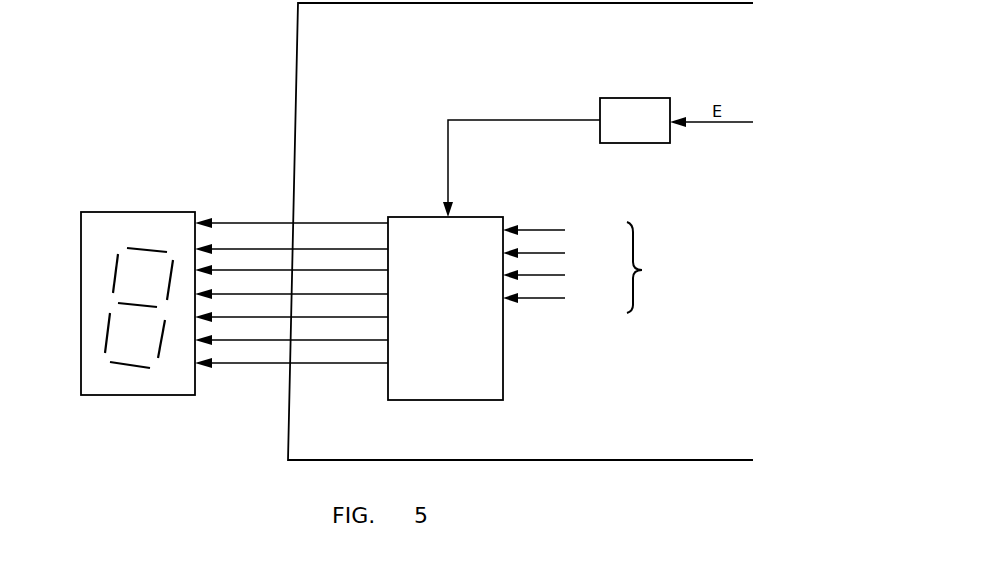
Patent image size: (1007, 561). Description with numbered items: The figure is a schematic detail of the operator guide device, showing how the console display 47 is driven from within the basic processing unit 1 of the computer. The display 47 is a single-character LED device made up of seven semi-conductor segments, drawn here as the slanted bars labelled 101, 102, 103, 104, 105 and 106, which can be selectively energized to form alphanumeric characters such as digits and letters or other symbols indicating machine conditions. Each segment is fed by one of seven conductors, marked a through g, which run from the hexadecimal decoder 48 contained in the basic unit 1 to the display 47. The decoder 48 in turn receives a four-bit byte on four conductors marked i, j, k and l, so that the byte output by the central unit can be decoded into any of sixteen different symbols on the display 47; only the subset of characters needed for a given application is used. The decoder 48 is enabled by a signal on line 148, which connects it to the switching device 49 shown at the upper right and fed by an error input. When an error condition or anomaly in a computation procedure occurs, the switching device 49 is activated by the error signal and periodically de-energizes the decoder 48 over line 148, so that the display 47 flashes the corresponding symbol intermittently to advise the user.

The basic processing unit 1 is at (298, 40).
The display 47 is at (122, 310).
The hexadecimal decoder 48 is at (503, 383).
The switching device 49 is at (653, 97).
The display segment a 101 is at (135, 248).
The display segment b 102 is at (175, 262).
The display segment c 103 is at (159, 340).
The display segment d 104 is at (112, 365).
The display segment e 105 is at (108, 325).
The display segment f 106 is at (114, 274).
The enabling line 148 is at (497, 118).